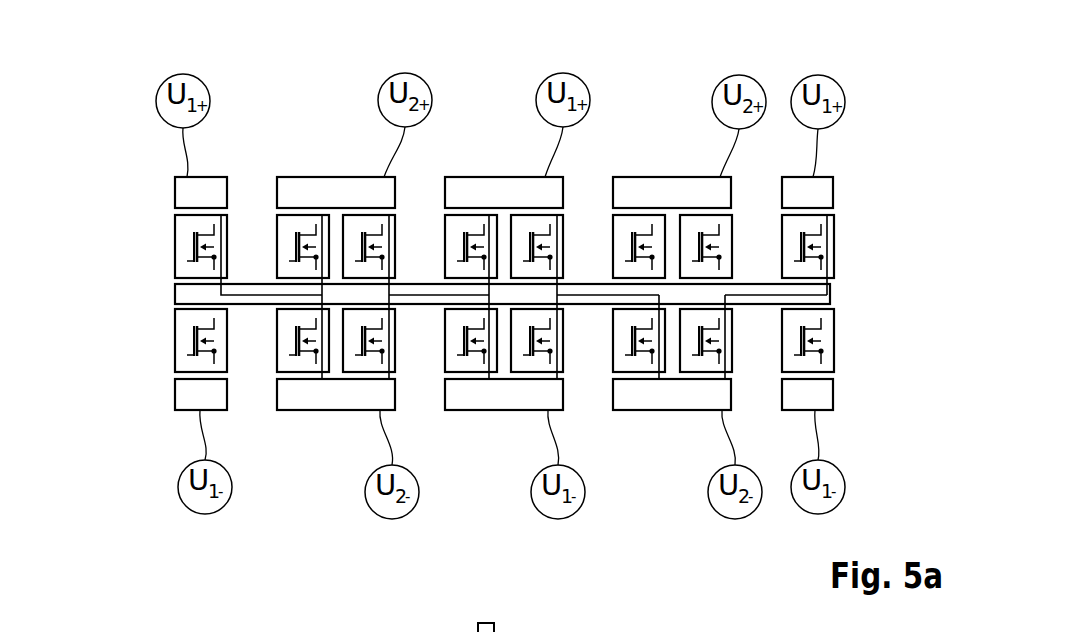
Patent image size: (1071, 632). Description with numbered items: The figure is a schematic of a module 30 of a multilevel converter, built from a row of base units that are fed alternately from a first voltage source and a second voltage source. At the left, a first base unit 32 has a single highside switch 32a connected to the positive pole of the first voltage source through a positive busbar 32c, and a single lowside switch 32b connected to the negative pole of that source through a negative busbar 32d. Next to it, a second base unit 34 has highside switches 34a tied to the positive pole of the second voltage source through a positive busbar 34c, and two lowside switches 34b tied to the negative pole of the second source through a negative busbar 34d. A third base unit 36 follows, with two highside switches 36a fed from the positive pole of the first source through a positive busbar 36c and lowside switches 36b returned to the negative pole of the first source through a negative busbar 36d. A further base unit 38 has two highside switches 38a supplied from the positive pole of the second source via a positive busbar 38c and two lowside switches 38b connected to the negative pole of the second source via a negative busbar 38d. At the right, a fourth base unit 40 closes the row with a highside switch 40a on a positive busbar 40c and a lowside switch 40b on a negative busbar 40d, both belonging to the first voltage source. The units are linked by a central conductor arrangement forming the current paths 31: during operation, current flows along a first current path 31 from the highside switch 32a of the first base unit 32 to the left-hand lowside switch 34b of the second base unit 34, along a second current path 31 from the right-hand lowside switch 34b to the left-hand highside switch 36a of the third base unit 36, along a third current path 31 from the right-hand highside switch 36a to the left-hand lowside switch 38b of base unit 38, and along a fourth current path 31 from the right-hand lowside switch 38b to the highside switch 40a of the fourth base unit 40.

The module 30 is at (92, 105).
The current path 31 is at (247, 297).
The first base unit 32 is at (229, 92).
The highside switch 32a is at (176, 246).
The lowside switch 32b is at (176, 342).
The positive busbar 32c is at (185, 194).
The negative busbar 32d is at (188, 396).
The second base unit 34 is at (367, 92).
The highside switches 34a is at (297, 215).
The lowside switches 34b is at (296, 372).
The positive busbar 34c is at (327, 188).
The negative busbar 34d is at (327, 400).
The third base unit 36 is at (528, 92).
The highside switches 36a is at (461, 215).
The lowside switches 36b is at (462, 372).
The positive busbar 36c is at (488, 188).
The negative busbar 36d is at (490, 398).
The base unit 38 is at (702, 92).
The highside switches 38a is at (632, 215).
The lowside switches 38b is at (632, 372).
The positive busbar 38c is at (663, 188).
The negative busbar 38d is at (660, 398).
The fourth base unit 40 is at (869, 92).
The highside switch 40a is at (834, 246).
The lowside switch 40b is at (834, 343).
The positive busbar 40c is at (820, 193).
The negative busbar 40d is at (820, 396).